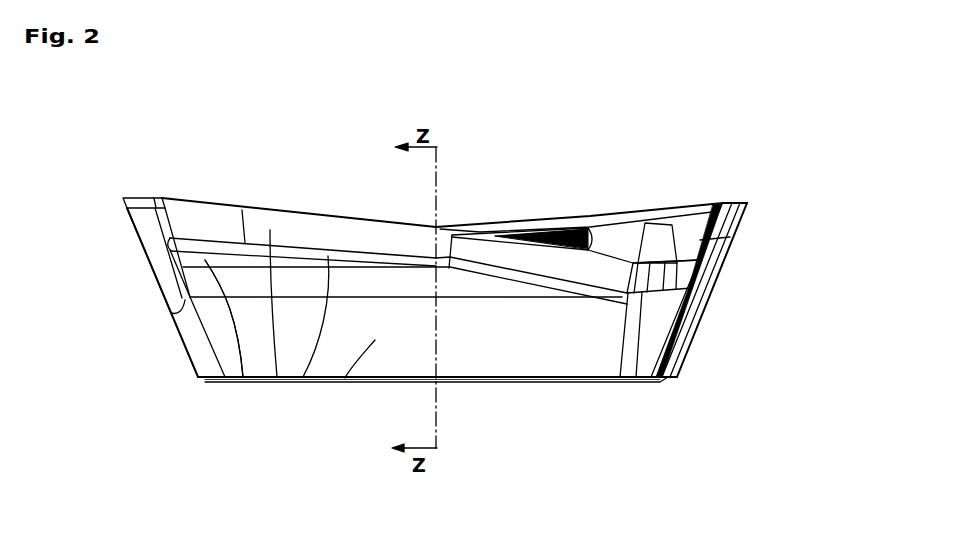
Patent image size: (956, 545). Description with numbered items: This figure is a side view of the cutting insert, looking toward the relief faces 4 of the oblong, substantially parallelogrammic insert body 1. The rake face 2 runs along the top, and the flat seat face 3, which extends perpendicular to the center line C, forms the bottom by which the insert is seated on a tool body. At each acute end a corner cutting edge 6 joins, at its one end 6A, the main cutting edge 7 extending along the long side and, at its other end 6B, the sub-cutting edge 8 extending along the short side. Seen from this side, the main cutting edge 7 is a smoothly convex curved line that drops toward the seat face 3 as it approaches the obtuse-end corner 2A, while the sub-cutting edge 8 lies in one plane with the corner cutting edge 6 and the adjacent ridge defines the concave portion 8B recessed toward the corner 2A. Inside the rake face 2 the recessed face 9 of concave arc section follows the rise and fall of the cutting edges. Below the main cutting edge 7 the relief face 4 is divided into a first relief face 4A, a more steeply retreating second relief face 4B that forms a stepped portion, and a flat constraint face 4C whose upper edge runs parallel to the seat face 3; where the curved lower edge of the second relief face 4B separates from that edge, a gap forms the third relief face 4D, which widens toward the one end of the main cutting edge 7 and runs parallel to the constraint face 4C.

The insert body 1 is at (284, 172).
The rake face 2 is at (557, 222).
The corner 2A is at (727, 257).
The seat face 3 is at (513, 382).
The relief faces 4 is at (143, 284).
The first relief face 4A is at (270, 383).
The second relief face 4B is at (308, 380).
The constraint face 4C is at (345, 377).
The third relief face 4D is at (250, 380).
The corner cutting edge 6 is at (140, 198).
The one end of corner cutting edge 6A is at (137, 198).
The other end of corner cutting edge 6B is at (122, 198).
The main cutting edge 7 is at (368, 222).
The sub-cutting edge 8 is at (747, 201).
The concave portion 8B is at (740, 237).
The recessed face 9 is at (660, 237).
The center line C is at (438, 221).